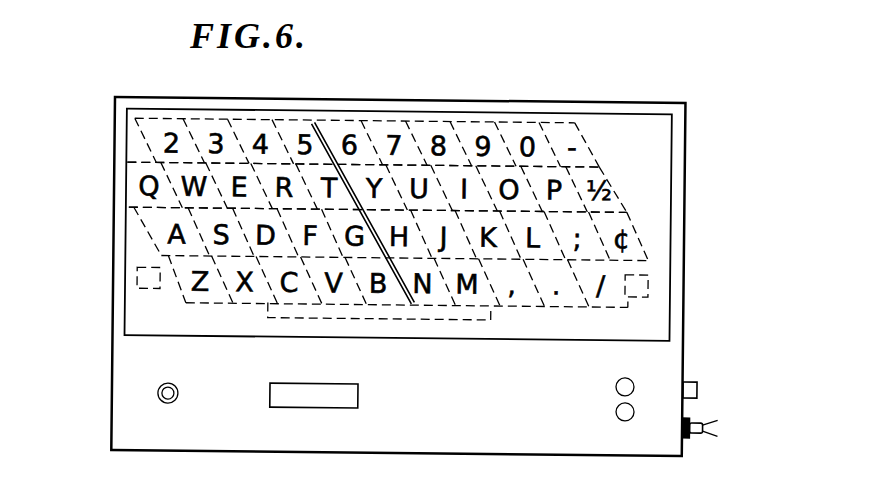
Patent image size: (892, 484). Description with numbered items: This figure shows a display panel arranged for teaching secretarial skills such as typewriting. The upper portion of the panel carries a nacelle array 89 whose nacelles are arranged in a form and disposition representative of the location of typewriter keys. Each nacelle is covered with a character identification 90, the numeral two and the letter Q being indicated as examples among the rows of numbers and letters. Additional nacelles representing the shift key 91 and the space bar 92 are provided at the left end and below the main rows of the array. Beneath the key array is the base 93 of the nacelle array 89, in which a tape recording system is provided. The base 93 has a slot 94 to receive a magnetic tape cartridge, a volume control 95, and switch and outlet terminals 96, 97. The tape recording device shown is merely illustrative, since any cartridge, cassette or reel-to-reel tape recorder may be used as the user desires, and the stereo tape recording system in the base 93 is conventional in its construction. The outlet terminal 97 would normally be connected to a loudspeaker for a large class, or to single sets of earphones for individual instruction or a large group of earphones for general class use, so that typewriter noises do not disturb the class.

The nacelle array 89 is at (538, 121).
The character identification 90 is at (160, 141).
The shift key nacelle 91 is at (147, 289).
The space bar nacelle 92 is at (302, 322).
The base 93 is at (452, 398).
The slot 94 is at (284, 406).
The volume control 95 is at (158, 394).
The switch terminal 96 is at (702, 423).
The outlet terminal 97 is at (694, 381).